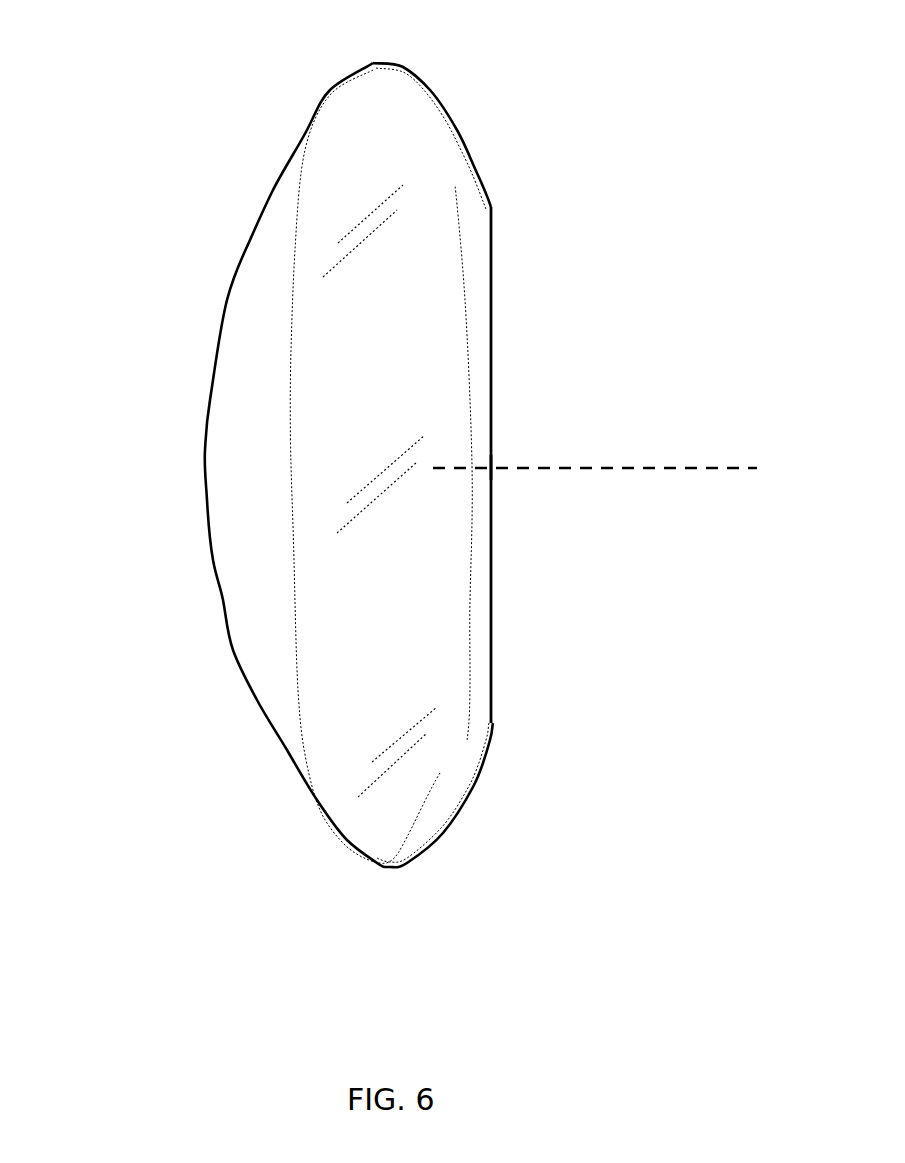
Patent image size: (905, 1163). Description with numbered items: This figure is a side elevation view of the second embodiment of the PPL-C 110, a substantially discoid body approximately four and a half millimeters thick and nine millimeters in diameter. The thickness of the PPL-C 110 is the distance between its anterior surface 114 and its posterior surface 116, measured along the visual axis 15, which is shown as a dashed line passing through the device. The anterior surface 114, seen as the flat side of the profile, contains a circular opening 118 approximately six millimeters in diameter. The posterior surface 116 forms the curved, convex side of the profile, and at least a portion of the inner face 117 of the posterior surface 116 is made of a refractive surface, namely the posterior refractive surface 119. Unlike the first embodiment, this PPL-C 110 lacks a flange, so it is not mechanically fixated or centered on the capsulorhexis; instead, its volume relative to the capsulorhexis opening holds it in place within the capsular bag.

The PPL-C 110 is at (335, 438).
The anterior surface 114 is at (492, 465).
The visual axis 15 is at (737, 465).
The posterior surface 116 is at (208, 472).
The inner face 117 is at (295, 581).
The posterior refractive surface 119 is at (295, 622).
The circular opening 118 is at (493, 528).